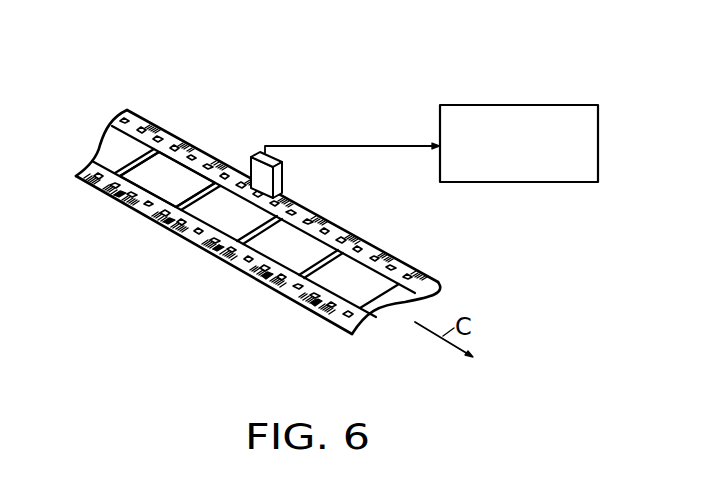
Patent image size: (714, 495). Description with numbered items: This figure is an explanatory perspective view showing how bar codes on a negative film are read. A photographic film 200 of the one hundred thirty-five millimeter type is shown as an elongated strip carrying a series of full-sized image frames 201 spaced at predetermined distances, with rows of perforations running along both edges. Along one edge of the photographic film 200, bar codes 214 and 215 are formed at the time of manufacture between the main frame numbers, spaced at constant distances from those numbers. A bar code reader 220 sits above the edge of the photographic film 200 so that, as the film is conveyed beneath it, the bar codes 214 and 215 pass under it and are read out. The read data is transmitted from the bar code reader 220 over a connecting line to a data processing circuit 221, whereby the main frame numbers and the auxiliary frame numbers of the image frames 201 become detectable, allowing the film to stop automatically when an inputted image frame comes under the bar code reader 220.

The photographic film 200 is at (386, 221).
The image frames 201 is at (160, 185).
The bar code 214 is at (410, 265).
The bar code 215 is at (378, 249).
The bar code reader 220 is at (255, 155).
The data processing circuit 221 is at (514, 105).